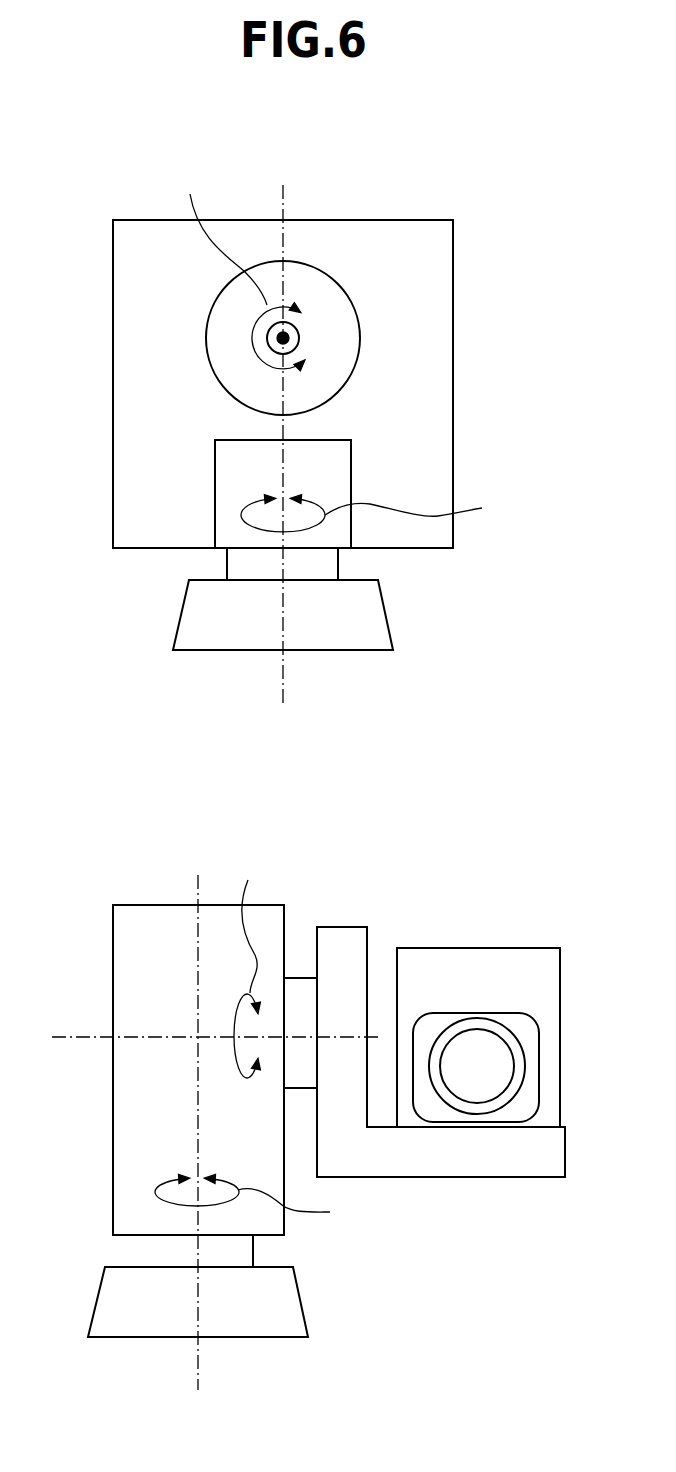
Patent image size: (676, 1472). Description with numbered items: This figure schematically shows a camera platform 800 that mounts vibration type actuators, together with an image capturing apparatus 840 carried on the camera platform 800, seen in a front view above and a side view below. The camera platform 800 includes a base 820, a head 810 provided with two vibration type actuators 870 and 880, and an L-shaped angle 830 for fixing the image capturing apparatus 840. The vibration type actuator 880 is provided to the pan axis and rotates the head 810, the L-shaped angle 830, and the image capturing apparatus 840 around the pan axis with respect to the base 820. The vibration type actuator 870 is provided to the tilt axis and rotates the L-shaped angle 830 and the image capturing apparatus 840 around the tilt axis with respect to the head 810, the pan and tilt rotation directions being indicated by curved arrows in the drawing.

The camera platform 800 is at (308, 130).
The head 810 is at (143, 905).
The base 820 is at (300, 1300).
The L-shaped angle 830 is at (342, 927).
The image capturing apparatus 840 is at (473, 948).
The vibration type actuator 870 is at (332, 280).
The vibration type actuator 880 is at (225, 505).